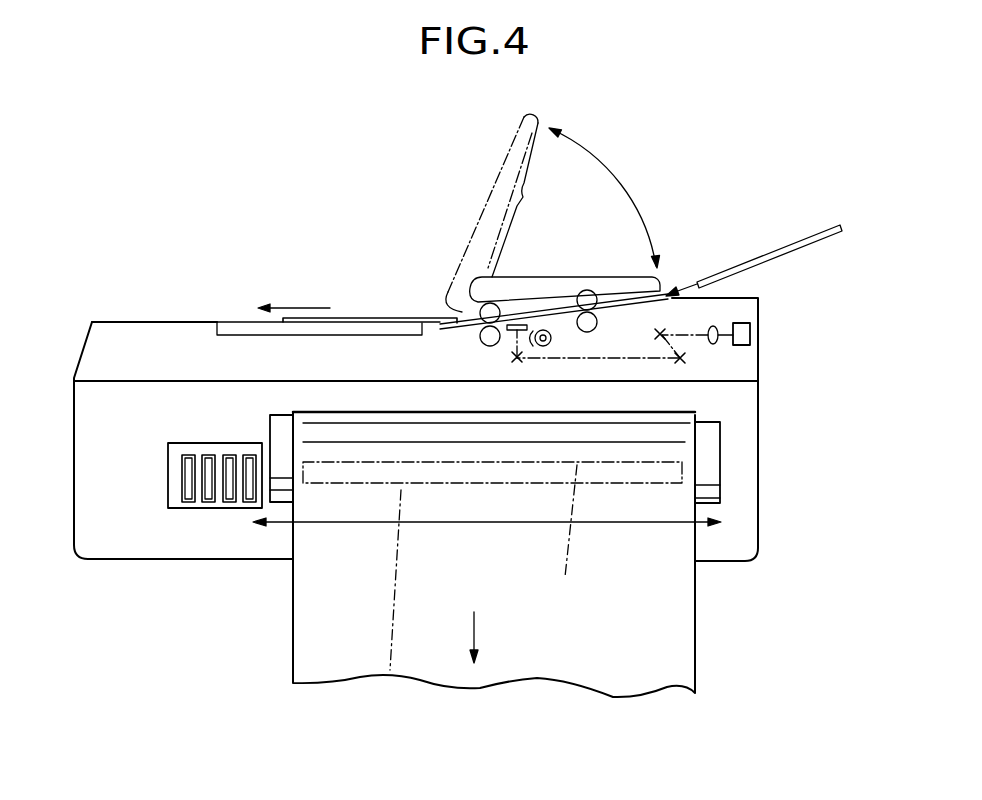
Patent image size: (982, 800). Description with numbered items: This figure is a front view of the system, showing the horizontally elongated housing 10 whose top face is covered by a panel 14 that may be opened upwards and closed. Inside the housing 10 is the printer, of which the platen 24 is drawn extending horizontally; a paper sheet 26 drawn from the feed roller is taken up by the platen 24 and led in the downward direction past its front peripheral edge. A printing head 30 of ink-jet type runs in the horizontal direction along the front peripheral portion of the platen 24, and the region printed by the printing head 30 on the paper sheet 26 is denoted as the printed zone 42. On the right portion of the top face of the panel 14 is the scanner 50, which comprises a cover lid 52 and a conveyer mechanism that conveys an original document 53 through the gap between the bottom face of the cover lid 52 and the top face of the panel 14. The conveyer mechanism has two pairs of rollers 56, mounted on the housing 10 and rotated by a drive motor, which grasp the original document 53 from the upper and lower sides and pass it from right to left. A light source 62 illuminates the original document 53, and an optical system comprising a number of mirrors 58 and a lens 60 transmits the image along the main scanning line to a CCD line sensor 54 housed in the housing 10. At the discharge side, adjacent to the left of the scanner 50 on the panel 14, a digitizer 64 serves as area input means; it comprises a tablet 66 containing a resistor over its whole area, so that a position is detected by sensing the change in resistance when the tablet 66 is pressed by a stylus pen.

The housing 10 is at (785, 545).
The panel 14 is at (124, 320).
The platen 24 is at (700, 486).
The paper sheet 26 is at (697, 634).
The printing head 30 is at (187, 443).
The printed zone 42 is at (668, 465).
The scanner 50 is at (696, 203).
The cover lid 52 is at (623, 276).
The original document 53 is at (808, 237).
The CCD line sensor 54 is at (743, 323).
The rollers 56 is at (470, 337).
The mirrors 58 is at (662, 330).
The lens 60 is at (715, 344).
The light source 62 is at (545, 328).
The digitizer 64 is at (221, 308).
The tablet 66 is at (249, 320).